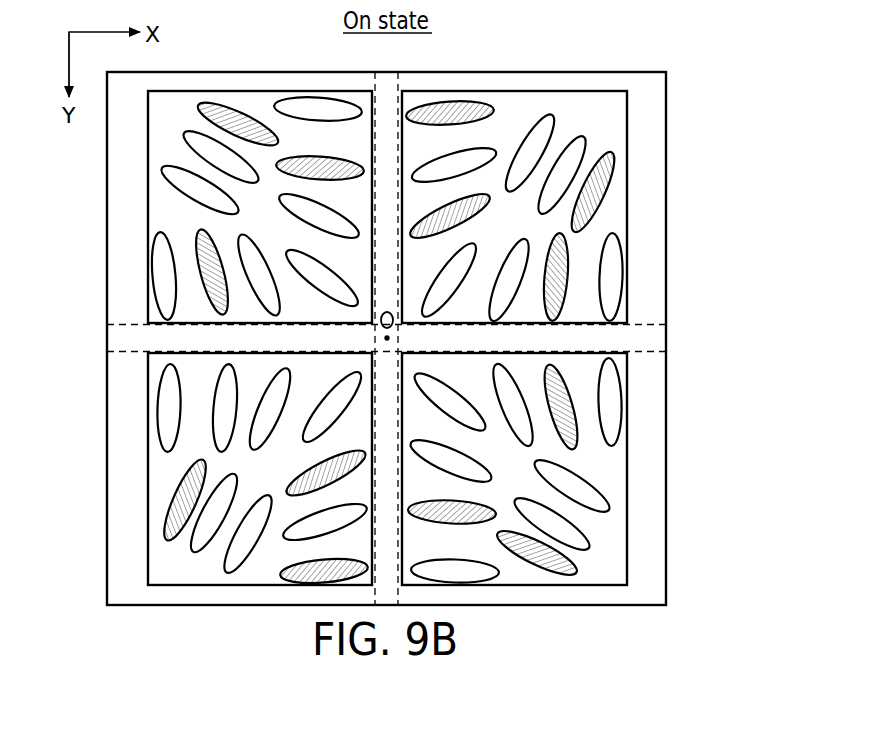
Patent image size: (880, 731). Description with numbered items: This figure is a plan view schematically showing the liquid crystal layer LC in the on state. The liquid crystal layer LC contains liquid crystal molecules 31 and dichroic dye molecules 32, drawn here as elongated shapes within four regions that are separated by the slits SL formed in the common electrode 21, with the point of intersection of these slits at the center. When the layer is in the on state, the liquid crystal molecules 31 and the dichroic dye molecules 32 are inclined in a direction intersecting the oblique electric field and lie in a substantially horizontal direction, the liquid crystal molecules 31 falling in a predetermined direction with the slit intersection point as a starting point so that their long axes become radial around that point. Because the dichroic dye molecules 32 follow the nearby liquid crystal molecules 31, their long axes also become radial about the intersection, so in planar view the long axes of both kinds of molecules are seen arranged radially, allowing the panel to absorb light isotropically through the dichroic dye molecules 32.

The common electrode 21 is at (147, 187).
The liquid crystal molecules 31 is at (178, 267).
The dichroic dye molecules 32 is at (193, 238).
The liquid crystal layer LC is at (667, 276).
The slit SL is at (645, 342).